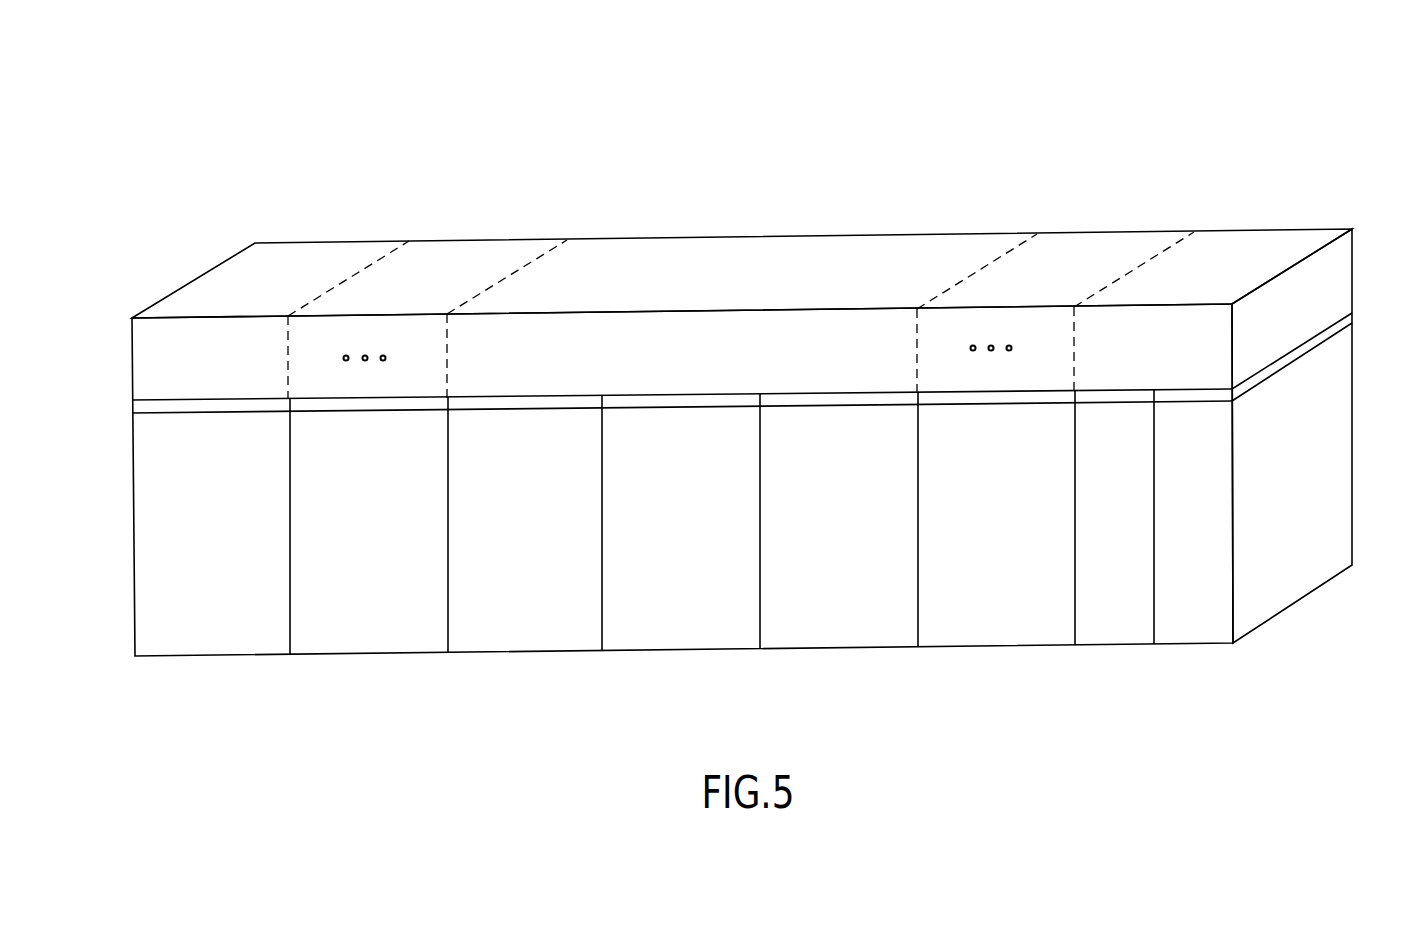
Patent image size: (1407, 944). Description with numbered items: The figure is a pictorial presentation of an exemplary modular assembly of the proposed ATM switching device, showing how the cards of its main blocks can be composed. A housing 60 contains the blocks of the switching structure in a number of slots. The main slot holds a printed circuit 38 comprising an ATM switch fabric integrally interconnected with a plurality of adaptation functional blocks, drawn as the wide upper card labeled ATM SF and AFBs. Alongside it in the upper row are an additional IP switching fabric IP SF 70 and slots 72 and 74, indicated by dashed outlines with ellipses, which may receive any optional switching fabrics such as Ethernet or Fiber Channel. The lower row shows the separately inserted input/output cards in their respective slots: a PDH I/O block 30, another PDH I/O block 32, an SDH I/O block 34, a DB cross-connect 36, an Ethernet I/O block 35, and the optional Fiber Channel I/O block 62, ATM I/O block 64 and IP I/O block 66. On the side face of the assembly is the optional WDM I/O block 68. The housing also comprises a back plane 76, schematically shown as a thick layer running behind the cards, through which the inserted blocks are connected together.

The housing 60 is at (1244, 86).
The IP SF 70 is at (130, 362).
The slot 72 is at (465, 255).
The printed circuit 38 is at (607, 327).
The slot 74 is at (1099, 247).
The WDM I/O block 68 is at (1343, 247).
The back plane 76 is at (1317, 340).
The PDH I/O block 30 is at (212, 656).
The PDH I/O block 32 is at (344, 654).
The SDH I/O block 34 is at (523, 652).
The DB cross-connect 36 is at (657, 650).
The Ethernet I/O block 35 is at (815, 648).
The Fiber Channel I/O block 62 is at (997, 645).
The ATM I/O block 64 is at (1102, 644).
The IP I/O block 66 is at (1187, 643).